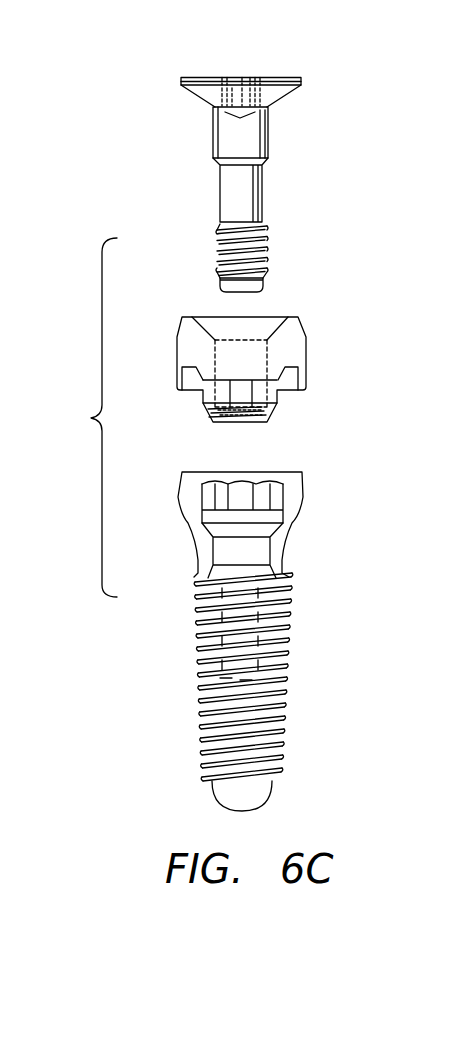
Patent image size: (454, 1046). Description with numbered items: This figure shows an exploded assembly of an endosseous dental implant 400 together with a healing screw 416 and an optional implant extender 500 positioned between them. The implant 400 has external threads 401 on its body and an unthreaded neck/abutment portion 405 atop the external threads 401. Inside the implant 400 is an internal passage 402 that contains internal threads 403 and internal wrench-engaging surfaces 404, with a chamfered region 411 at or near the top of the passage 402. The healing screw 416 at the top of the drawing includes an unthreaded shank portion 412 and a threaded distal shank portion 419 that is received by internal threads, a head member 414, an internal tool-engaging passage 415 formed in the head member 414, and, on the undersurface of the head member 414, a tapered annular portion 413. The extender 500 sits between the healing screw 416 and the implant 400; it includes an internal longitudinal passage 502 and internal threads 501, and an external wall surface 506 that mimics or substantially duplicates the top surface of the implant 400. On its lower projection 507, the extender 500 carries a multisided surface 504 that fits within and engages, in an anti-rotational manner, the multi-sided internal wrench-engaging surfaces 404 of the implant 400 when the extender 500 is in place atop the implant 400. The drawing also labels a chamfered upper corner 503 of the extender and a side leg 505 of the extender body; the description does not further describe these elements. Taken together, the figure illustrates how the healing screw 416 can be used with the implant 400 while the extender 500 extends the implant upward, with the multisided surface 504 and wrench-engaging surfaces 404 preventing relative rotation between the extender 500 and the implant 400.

The endosseous dental implant 400 is at (305, 763).
The external threads 401 is at (195, 645).
The internal passage 402 is at (248, 632).
The internal threads 403 is at (282, 580).
The internal wrench-engaging surfaces 404 is at (278, 499).
The unthreaded neck/abutment portion 405 is at (188, 522).
The chamfered region 411 is at (293, 472).
The unthreaded shank portion 412 is at (262, 210).
The tapered annular portion 413 is at (278, 98).
The head member 414 is at (283, 77).
The internal tool-engaging passage 415 is at (240, 77).
The healing screw 416 is at (328, 157).
The threaded distal shank portion 419 is at (262, 267).
The implant extender 500 is at (366, 321).
The internal threads 501 is at (243, 410).
The internal longitudinal passage 502 is at (247, 345).
The chamfer 503 is at (199, 317).
The multisided surface 504 is at (240, 393).
The leg 505 is at (294, 385).
The external wall surface 506 is at (176, 362).
The projection 507 is at (210, 413).